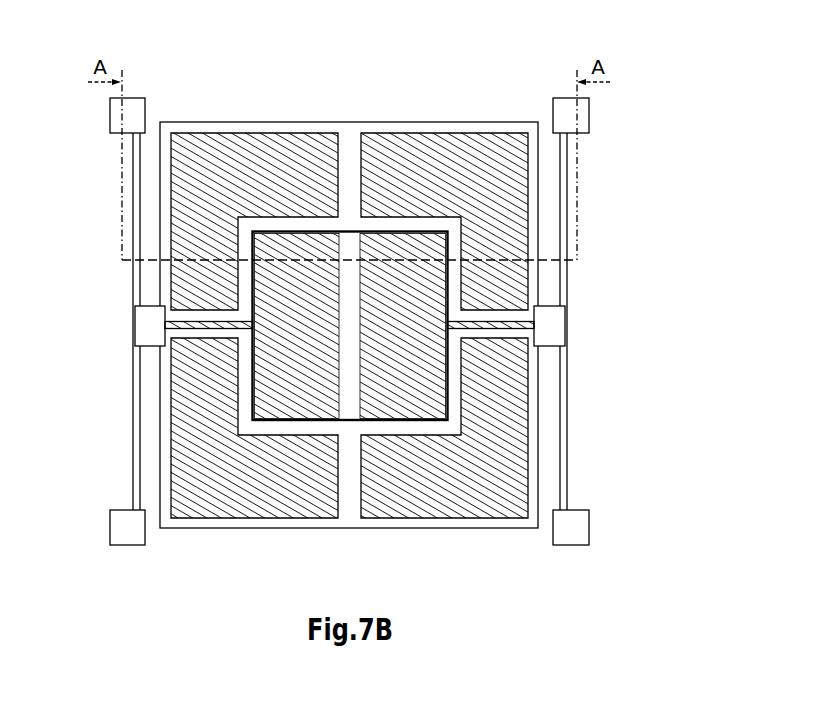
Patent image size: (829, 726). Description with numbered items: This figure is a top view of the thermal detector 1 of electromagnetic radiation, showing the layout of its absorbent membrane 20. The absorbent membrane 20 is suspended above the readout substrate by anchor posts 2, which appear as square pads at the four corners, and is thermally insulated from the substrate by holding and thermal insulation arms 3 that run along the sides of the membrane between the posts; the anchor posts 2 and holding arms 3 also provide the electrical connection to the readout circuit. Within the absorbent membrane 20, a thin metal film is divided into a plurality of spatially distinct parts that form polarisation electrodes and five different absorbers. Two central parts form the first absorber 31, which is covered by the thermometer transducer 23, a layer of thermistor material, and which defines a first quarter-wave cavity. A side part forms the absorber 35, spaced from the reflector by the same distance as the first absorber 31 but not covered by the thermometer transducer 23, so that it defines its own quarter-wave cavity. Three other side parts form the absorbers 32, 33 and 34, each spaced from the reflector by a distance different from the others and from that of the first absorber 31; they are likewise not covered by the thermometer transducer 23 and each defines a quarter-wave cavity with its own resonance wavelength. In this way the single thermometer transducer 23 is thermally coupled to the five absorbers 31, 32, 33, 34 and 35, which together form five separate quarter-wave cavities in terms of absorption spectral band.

The thermal detector 1 is at (80, 137).
The anchor posts 2 is at (593, 116).
The holding and thermal insulation arms 3 is at (570, 404).
The absorbent membrane 20 is at (297, 119).
The thermometer transducer 23 is at (349, 230).
The first absorber 31 is at (383, 405).
The absorber 32 is at (225, 160).
The absorber 33 is at (465, 160).
The absorber 34 is at (455, 508).
The absorber 35 is at (246, 508).